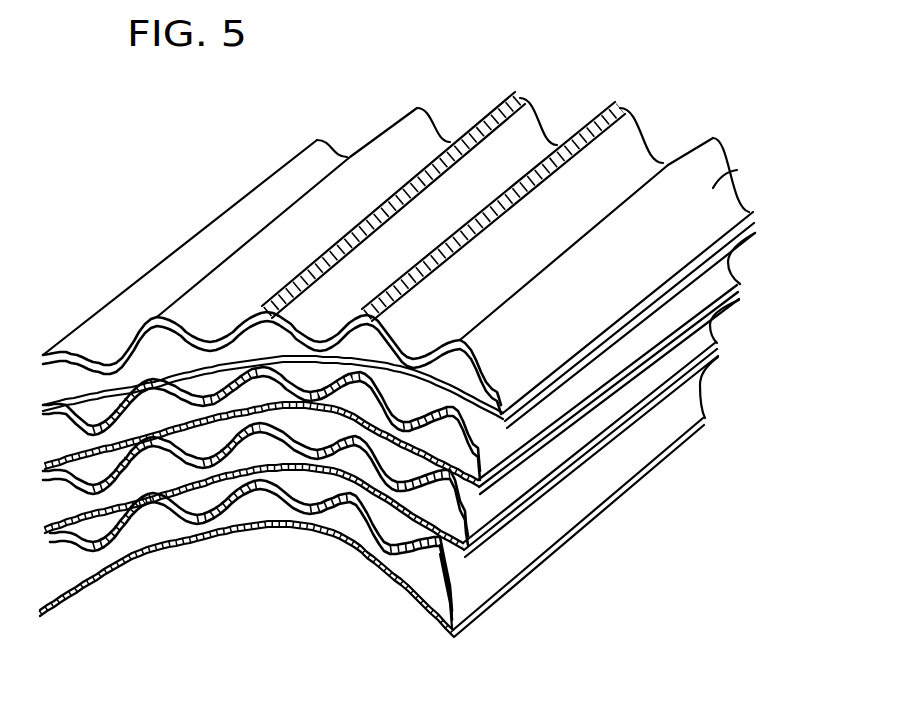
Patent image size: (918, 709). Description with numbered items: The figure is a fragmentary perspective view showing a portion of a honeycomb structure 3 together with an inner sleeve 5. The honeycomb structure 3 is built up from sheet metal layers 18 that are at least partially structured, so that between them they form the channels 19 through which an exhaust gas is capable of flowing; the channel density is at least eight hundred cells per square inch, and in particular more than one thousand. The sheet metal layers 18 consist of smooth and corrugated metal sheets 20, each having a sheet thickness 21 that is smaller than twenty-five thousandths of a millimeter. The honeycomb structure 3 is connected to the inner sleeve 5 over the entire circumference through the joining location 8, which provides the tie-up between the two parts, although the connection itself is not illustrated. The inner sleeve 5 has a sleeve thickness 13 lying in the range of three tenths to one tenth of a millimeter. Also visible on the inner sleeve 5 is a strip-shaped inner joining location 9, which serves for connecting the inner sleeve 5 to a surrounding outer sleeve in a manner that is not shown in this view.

The honeycomb structure 3 is at (678, 407).
The inner sleeve 5 is at (748, 162).
The joining location 8 is at (757, 219).
The strip-shaped inner joining location 9 is at (610, 122).
The sleeve thickness 13 is at (150, 317).
The sheet metal layers 18 is at (543, 571).
The channels 19 is at (152, 522).
The smooth and corrugated metal sheets 20 is at (480, 583).
The sheet thickness 21 is at (330, 543).